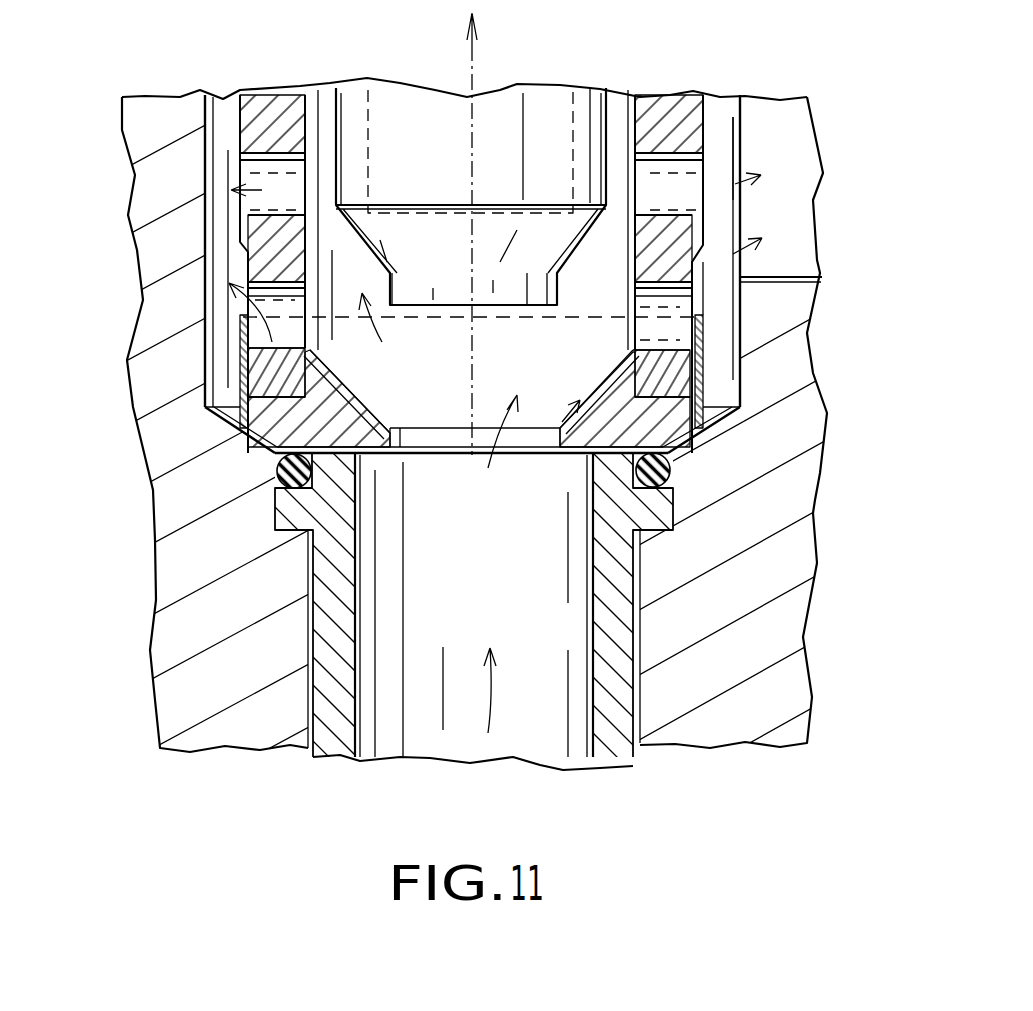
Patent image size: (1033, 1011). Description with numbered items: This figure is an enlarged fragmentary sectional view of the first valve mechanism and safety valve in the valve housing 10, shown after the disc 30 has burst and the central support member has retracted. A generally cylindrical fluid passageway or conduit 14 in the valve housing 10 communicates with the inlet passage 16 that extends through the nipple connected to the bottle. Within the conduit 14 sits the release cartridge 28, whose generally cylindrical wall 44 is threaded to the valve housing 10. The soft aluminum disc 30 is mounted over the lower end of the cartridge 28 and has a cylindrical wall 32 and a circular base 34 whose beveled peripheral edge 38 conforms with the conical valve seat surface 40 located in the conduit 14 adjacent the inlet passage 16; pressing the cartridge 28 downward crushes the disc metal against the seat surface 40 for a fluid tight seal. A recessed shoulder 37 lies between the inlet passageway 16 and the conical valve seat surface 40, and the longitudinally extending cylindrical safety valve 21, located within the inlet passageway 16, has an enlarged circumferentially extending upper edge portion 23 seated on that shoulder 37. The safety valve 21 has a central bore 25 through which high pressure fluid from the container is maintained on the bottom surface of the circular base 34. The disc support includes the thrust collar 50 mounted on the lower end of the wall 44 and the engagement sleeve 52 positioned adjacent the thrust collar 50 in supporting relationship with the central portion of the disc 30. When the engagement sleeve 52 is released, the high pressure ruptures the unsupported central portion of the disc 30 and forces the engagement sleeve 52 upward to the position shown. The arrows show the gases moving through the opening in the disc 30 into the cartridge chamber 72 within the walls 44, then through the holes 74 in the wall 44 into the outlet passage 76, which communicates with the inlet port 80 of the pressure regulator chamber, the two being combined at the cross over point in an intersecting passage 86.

The valve housing 10 is at (810, 486).
The fluid passageway or conduit 14 is at (222, 108).
The inlet passage 16 is at (640, 718).
The safety valve 21 is at (330, 750).
The upper edge portion 23 is at (663, 512).
The central bore 25 is at (358, 732).
The release cartridge 28 is at (268, 94).
The disc 30 is at (705, 367).
The cylindrical wall 32 is at (240, 375).
The circular base 34 is at (582, 453).
The recessed shoulder 37 is at (273, 533).
The peripheral edge 38 is at (278, 474).
The valve seat surface 40 is at (262, 438).
The cylindrical wall 44 is at (672, 123).
The thrust collar 50 is at (663, 423).
The engagement sleeve 52 is at (433, 288).
The cartridge chamber 72 is at (325, 230).
The holes 74 is at (255, 152).
The outlet passage 76 is at (715, 288).
The inlet port 80 is at (805, 203).
The intersecting passage 86 is at (753, 110).